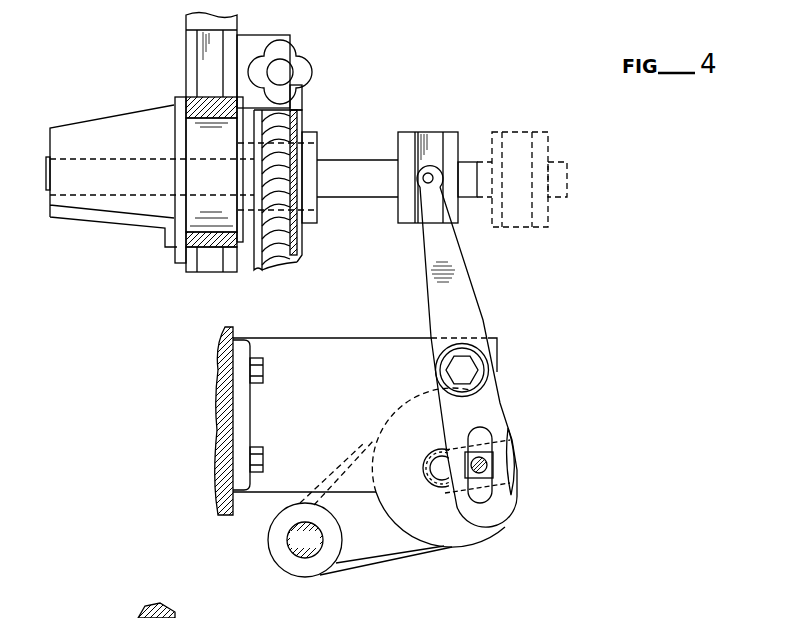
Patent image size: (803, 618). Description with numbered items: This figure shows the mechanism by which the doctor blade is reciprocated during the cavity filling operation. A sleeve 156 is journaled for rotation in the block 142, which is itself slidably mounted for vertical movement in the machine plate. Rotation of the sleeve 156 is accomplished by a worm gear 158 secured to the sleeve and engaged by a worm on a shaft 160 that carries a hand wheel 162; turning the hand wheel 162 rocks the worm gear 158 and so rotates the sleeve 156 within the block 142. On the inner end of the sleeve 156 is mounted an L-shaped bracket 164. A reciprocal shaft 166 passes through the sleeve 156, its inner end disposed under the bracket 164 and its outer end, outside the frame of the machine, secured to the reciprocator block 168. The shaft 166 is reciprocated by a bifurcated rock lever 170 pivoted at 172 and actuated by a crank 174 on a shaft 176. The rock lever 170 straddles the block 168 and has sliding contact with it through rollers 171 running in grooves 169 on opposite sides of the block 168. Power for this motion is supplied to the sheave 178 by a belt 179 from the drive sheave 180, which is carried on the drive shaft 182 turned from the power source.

The block 142 is at (193, 45).
The sleeve 156 is at (222, 188).
The worm gear 158 is at (278, 264).
The shaft 160 is at (302, 93).
The hand wheel 162 is at (285, 50).
The L-shaped bracket 164 is at (137, 146).
The reciprocal shaft 166 is at (370, 188).
The reciprocator block 168 is at (460, 145).
The grooves 169 is at (425, 135).
The bifurcated rock lever 170 is at (465, 292).
The rollers 171 is at (416, 182).
The pivot 172 is at (462, 370).
The crank 174 is at (517, 450).
The shaft 176 is at (430, 465).
The sheave 178 is at (455, 535).
The belt 179 is at (373, 557).
The drive sheave 180 is at (307, 571).
The drive shaft 182 is at (305, 540).